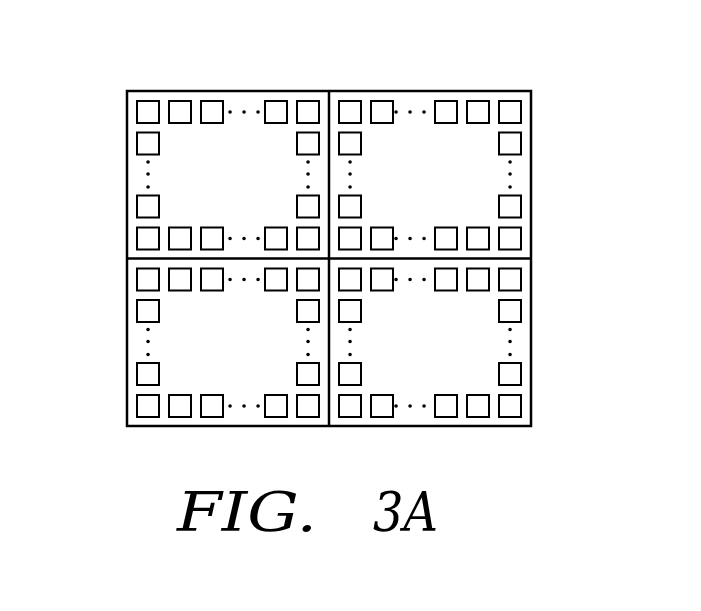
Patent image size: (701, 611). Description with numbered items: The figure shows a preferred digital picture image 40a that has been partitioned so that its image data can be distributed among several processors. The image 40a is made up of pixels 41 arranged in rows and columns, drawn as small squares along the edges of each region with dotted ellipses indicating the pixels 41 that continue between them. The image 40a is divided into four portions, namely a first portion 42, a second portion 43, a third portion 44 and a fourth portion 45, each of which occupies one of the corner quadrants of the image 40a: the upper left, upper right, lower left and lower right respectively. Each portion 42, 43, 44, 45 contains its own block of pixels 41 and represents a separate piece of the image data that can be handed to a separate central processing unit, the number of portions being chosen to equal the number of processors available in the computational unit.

The digital picture image 40a is at (127, 305).
The pixels 41 is at (148, 110).
The portion (1a) 42 is at (212, 172).
The portion (2a) 43 is at (455, 172).
The portion (3a) 44 is at (213, 345).
The portion (4a) 45 is at (455, 338).